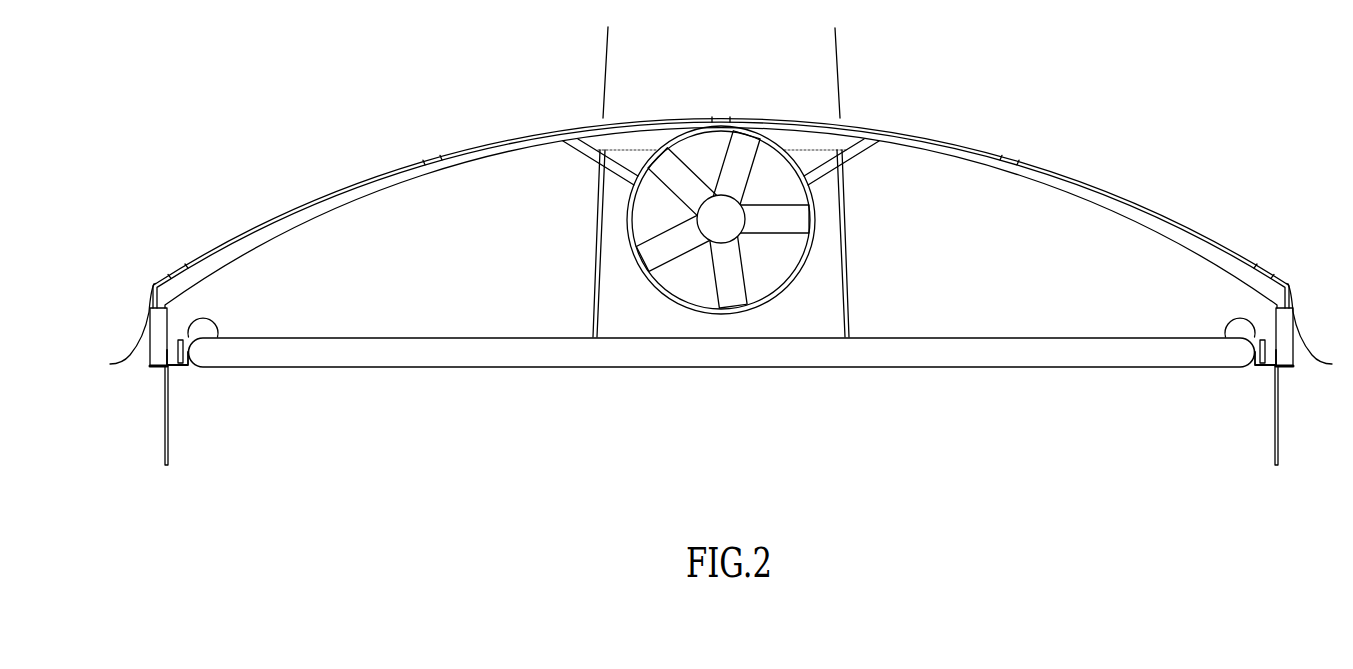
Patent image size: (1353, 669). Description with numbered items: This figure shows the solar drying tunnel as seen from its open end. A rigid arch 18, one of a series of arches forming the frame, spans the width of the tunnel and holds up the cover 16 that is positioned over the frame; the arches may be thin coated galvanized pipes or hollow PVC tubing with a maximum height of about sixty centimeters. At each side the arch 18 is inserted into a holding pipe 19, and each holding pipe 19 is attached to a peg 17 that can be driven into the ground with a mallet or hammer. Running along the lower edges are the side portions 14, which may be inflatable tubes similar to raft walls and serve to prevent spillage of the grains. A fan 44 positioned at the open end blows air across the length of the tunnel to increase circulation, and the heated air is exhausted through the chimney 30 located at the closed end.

The side portions 14 is at (368, 352).
The cover 16 is at (250, 229).
The pegs 17 is at (165, 443).
The rigid arches 18 is at (362, 197).
The holding pipes 19 is at (150, 352).
The chimney 30 is at (822, 82).
The fan 44 is at (672, 303).